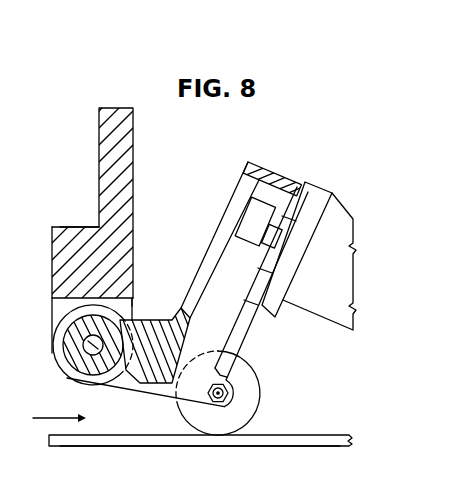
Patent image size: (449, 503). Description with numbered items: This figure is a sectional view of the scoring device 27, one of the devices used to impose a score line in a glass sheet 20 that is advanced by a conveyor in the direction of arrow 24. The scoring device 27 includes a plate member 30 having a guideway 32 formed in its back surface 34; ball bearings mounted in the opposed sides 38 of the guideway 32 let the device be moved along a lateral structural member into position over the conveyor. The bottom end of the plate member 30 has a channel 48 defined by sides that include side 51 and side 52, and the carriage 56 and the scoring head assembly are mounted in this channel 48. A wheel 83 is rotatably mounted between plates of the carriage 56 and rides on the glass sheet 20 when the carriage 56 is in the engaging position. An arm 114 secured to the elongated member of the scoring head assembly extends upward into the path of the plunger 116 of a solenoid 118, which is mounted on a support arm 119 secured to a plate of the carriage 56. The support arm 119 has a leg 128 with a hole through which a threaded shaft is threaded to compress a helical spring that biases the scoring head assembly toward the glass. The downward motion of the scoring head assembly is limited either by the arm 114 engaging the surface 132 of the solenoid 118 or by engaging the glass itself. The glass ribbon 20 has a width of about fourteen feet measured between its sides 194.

The glass sheet 20 is at (298, 419).
The arrow 24 is at (57, 418).
The scoring device 27 is at (302, 108).
The plate member 30 is at (123, 107).
The guideway 32 is at (61, 214).
The back surface 34 is at (52, 268).
The opposed sides of the guideway 38 is at (82, 226).
The channel 48 is at (143, 312).
The side of channel 51 is at (134, 302).
The side of channel 52 is at (52, 305).
The carriage 56 is at (85, 347).
The wheel 83 is at (258, 390).
The arm 114 is at (218, 257).
The plunger 116 is at (266, 249).
The solenoid 118 is at (317, 323).
The support arm 119 is at (229, 180).
The leg 128 is at (281, 167).
The surface 132 is at (285, 214).
The sides of glass ribbon 194 is at (251, 443).